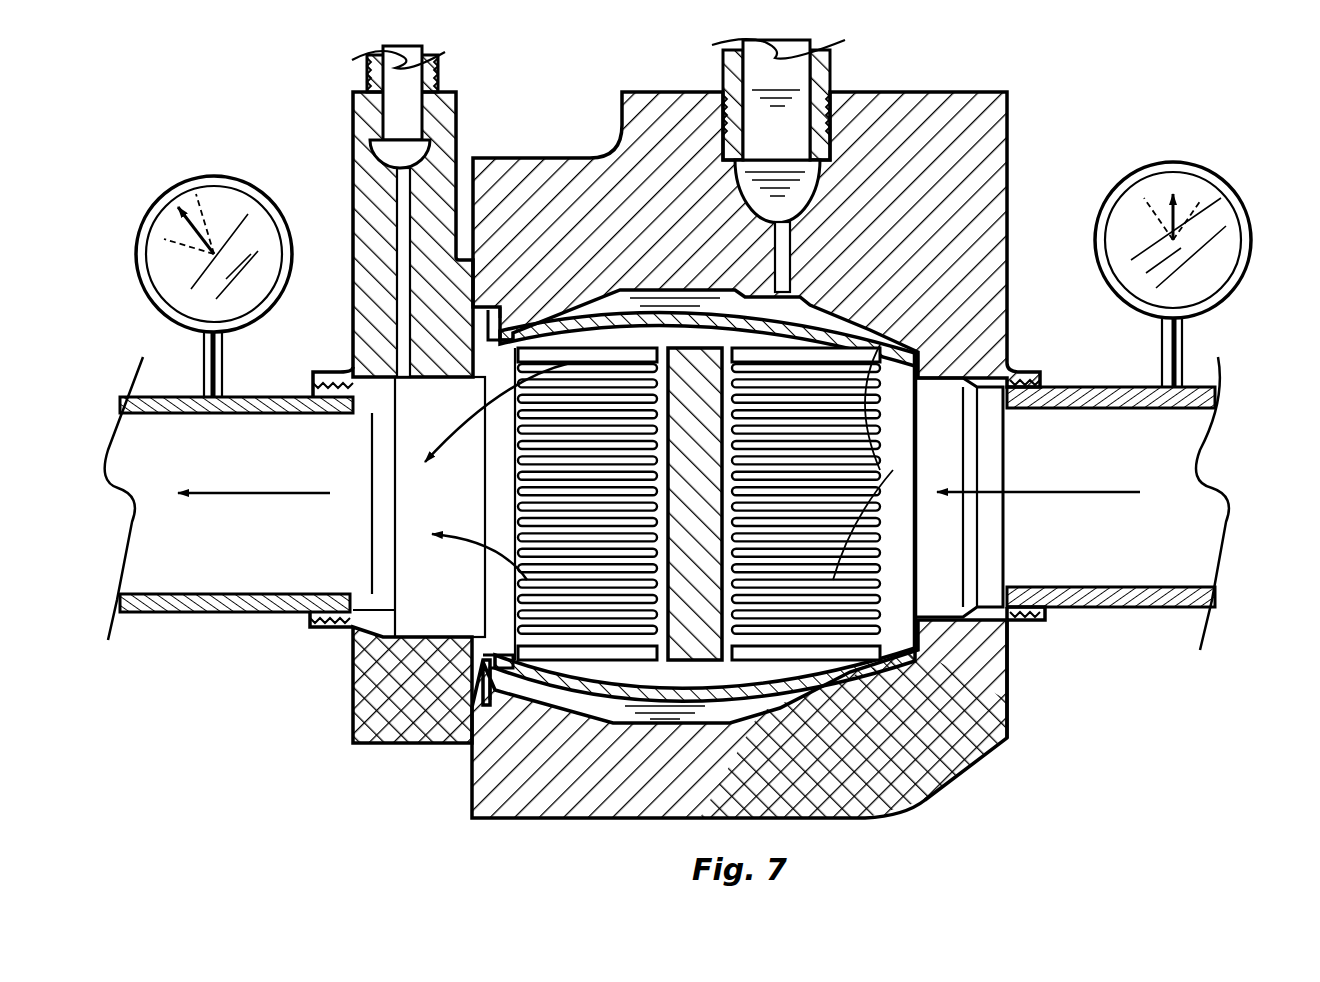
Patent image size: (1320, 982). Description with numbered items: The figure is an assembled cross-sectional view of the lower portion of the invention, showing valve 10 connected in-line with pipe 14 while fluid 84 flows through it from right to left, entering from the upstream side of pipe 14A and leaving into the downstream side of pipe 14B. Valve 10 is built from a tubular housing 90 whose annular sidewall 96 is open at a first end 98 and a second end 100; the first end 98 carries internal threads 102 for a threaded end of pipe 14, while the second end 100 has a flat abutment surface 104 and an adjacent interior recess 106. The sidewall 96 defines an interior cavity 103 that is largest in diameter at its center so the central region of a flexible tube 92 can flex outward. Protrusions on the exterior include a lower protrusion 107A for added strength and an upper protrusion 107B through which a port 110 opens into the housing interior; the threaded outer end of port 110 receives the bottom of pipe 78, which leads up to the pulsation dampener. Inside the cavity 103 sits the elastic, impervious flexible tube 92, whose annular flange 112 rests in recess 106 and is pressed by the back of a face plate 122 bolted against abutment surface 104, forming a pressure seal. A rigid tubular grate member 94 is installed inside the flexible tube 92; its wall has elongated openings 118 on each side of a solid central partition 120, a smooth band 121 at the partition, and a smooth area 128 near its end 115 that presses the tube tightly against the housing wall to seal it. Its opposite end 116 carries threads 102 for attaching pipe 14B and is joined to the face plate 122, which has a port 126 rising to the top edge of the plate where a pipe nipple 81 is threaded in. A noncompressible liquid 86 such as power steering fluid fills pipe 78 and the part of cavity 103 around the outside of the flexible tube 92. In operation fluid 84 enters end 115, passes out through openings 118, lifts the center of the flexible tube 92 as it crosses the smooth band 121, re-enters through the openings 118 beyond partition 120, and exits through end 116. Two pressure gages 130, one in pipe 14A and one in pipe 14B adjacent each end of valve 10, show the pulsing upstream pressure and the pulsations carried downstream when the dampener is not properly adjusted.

The valve 10 is at (1152, 126).
The pipe 14 is at (195, 612).
The upstream side of pipe 14A is at (1213, 640).
The downstream side of pipe 14B is at (134, 632).
The pipe 78 is at (738, 80).
The pipe nipple 81 is at (440, 72).
The fluid 84 is at (262, 492).
The liquid 86 is at (668, 303).
The housing 90 is at (990, 185).
The flexible tube 92 is at (958, 760).
The tubular grate member 94 is at (922, 748).
The annular sidewall 96 is at (530, 816).
The first end 98 is at (1018, 365).
The second end 100 is at (472, 818).
The internal threads 102 is at (333, 626).
The interior cavity 103 is at (705, 290).
The abutment surface 104 is at (490, 308).
The recess 106 is at (447, 745).
The lower protrusion 107A is at (990, 690).
The upper protrusion 107B is at (1000, 128).
The port 110 is at (870, 95).
The annular flange 112 is at (400, 748).
The end 115 is at (913, 445).
The end 116 is at (272, 608).
The openings 118 is at (807, 475).
The partition 120 is at (836, 640).
The band 121 is at (805, 818).
The face plate 122 is at (350, 360).
The port 126 is at (400, 203).
The area 128 is at (1000, 735).
The pressure gage 130 is at (180, 189).